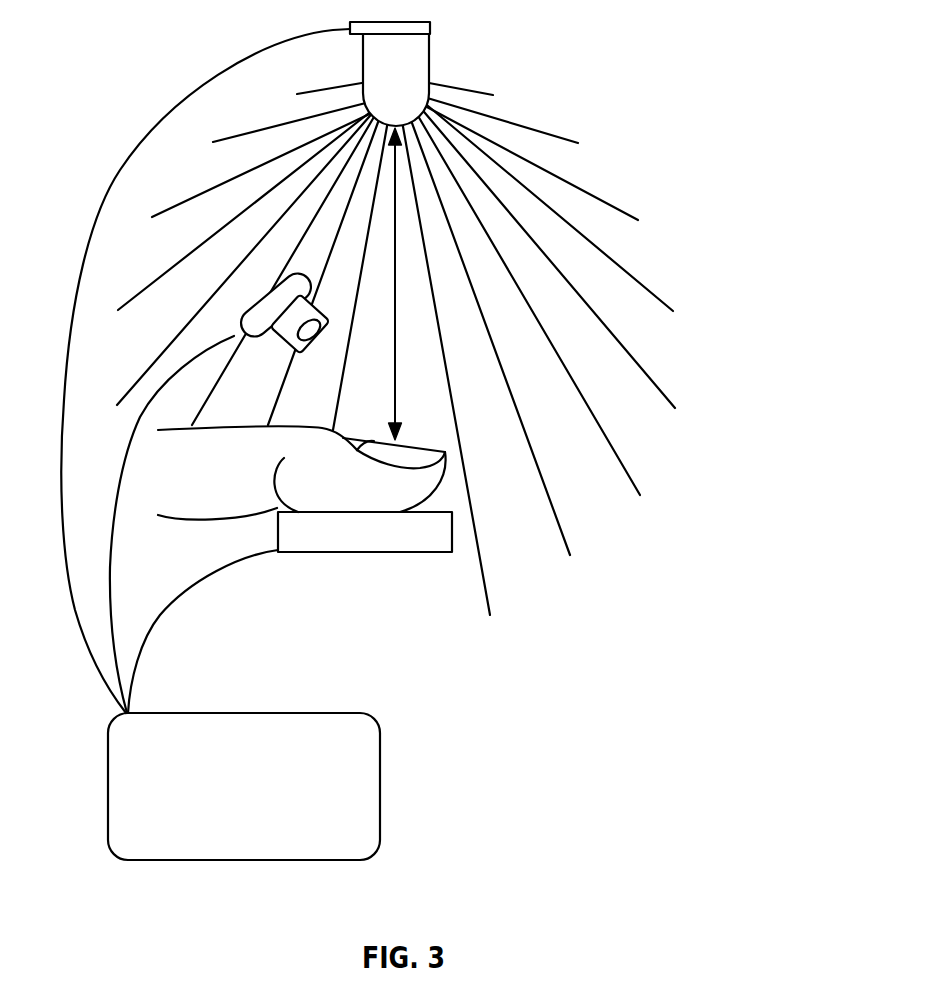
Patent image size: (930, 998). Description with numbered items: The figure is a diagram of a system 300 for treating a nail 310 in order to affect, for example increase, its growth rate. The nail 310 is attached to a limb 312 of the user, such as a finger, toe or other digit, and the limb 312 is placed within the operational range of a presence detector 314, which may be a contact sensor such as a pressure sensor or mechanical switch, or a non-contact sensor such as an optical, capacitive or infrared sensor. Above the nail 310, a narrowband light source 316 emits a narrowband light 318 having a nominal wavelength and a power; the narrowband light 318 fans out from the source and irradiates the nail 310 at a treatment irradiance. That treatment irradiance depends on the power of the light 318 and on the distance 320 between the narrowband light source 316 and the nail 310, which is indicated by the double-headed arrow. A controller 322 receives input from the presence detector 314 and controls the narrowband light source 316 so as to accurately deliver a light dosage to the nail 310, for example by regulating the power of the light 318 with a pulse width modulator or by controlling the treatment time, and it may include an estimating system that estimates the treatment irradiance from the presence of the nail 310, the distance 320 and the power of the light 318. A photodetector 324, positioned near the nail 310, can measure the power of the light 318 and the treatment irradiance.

The system 300 is at (424, 441).
The nail 310 is at (411, 440).
The limb 312 is at (202, 518).
The presence detector 314 is at (363, 553).
The narrowband light source 316 is at (430, 72).
The narrowband light 318 is at (580, 388).
The distance 320 is at (396, 373).
The controller 322 is at (380, 803).
The photodetector 324 is at (322, 302).